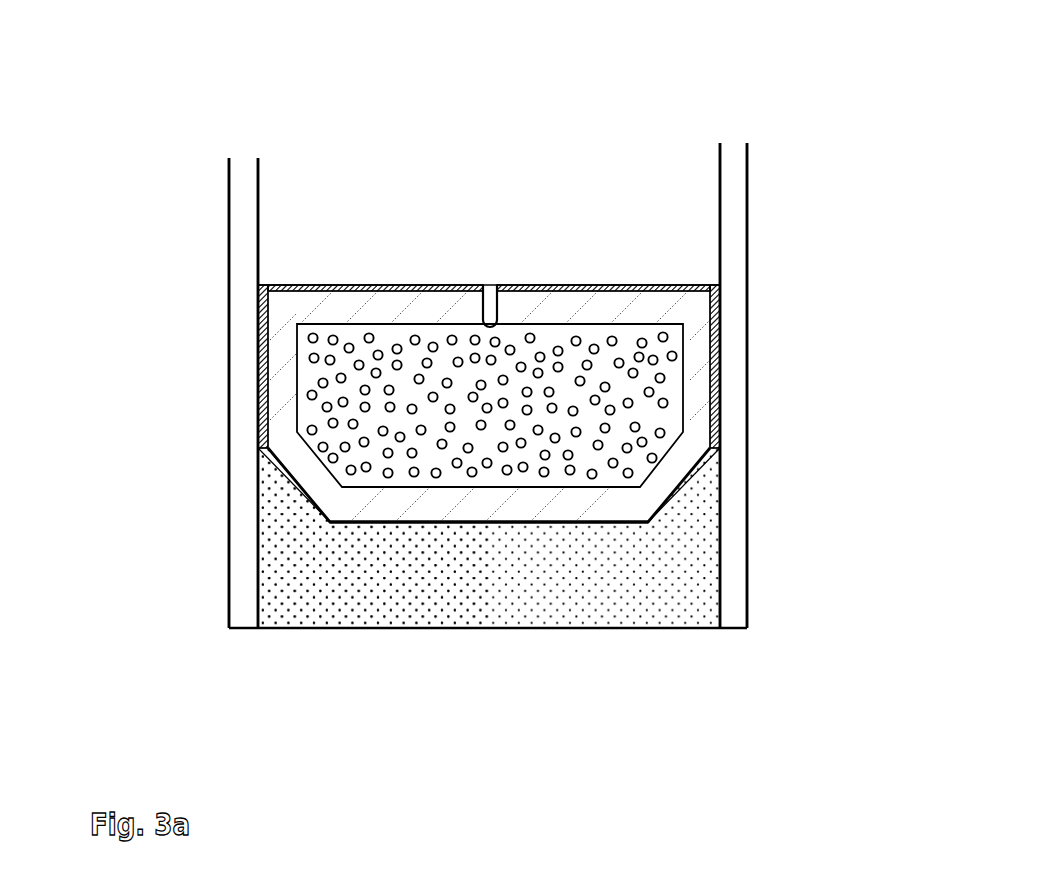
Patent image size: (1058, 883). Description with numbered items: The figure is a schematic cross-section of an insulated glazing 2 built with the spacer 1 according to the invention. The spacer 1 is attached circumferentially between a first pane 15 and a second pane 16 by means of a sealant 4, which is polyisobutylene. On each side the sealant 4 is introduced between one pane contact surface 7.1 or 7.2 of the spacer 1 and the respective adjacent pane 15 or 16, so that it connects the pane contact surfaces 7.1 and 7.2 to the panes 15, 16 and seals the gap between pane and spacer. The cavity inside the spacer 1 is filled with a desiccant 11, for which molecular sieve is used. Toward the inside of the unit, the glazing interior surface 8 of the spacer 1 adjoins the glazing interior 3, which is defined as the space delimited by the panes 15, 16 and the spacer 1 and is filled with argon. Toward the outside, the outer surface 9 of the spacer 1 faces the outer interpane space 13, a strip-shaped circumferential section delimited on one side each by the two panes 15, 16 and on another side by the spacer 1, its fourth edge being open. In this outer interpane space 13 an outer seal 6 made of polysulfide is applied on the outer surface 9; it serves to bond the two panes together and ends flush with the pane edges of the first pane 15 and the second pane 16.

The spacer 1 is at (280, 395).
The insulated glazing 2 is at (397, 112).
The glazing interior 3 is at (305, 207).
The sealant 4 is at (262, 419).
The outer seal 6 is at (583, 604).
The pane contact surface 7.1 is at (262, 312).
The pane contact surface 7.2 is at (718, 320).
The glazing interior surface 8 is at (655, 288).
The outer surface 9 is at (343, 523).
The desiccant 11 is at (389, 478).
The outer interpane space 13 is at (285, 556).
The first pane 15 is at (240, 492).
The second pane 16 is at (733, 445).